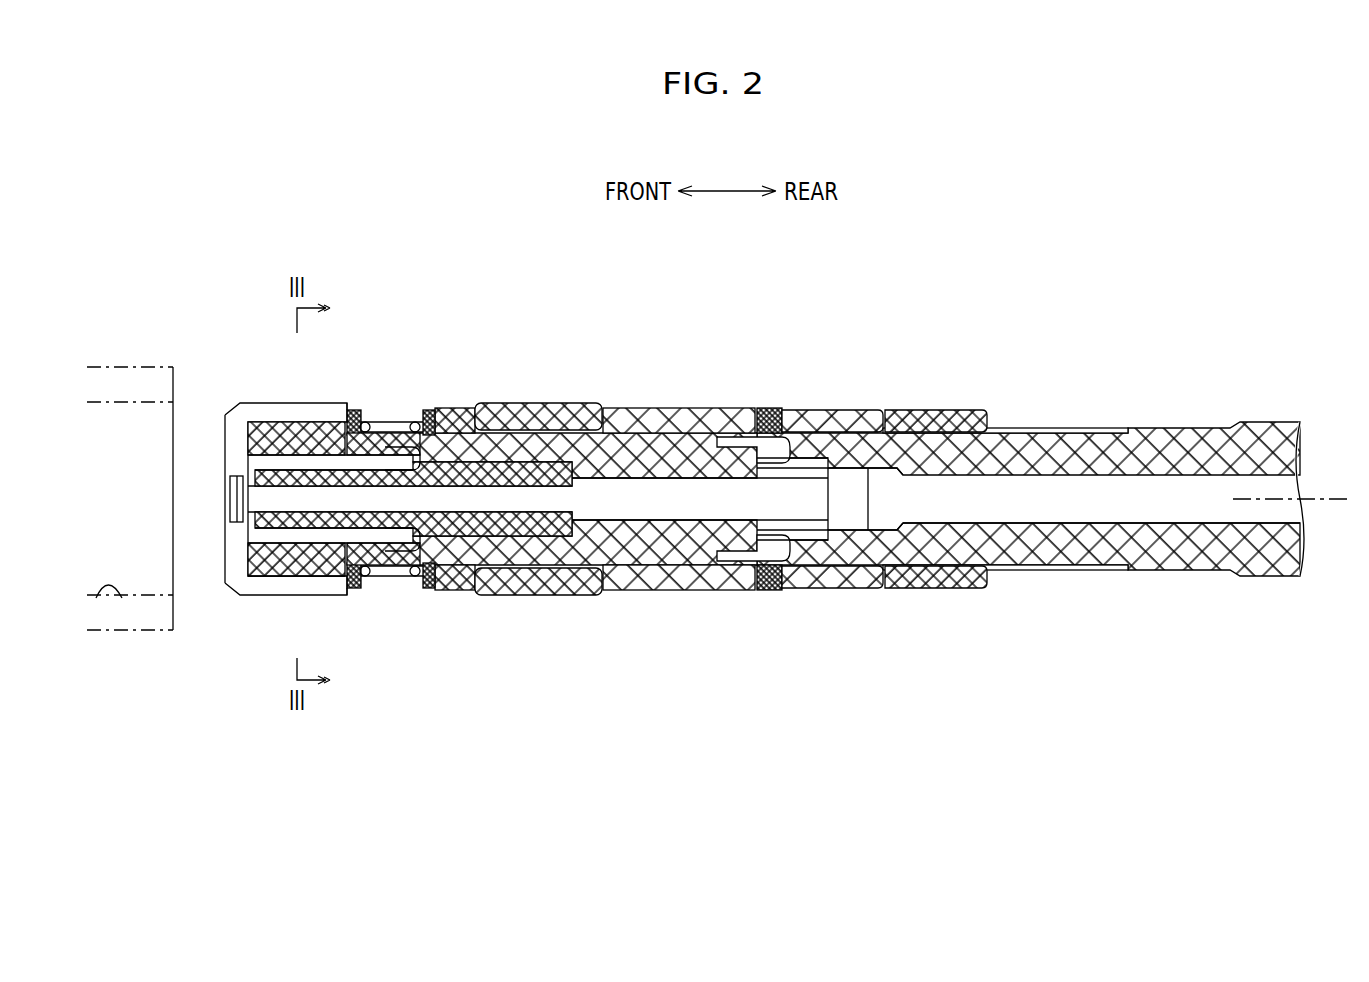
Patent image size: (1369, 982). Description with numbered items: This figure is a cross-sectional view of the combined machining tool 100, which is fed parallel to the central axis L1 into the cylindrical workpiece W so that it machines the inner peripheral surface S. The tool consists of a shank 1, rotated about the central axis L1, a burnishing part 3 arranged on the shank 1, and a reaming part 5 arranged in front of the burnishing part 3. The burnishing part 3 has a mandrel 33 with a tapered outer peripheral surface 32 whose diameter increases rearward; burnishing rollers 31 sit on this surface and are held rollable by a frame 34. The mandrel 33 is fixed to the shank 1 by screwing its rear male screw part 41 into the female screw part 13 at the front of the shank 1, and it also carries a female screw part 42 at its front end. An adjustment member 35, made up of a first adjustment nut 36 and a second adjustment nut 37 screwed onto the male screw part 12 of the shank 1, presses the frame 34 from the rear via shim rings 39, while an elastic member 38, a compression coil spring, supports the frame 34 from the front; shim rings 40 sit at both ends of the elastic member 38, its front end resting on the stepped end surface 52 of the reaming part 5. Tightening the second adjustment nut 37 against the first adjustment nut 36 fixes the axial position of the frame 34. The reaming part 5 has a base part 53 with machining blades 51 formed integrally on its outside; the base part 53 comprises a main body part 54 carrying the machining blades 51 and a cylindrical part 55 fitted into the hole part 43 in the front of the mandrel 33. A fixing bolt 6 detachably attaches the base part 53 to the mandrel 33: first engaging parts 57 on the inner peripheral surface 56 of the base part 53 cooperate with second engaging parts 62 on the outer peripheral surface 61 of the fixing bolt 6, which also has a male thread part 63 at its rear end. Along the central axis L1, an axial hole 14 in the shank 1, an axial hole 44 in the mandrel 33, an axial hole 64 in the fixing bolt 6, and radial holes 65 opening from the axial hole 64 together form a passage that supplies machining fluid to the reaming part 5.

The combined machining tool 100 is at (948, 278).
The shank 1 is at (1052, 469).
The burnishing part 3 is at (617, 487).
The reaming part 5 is at (380, 476).
The fixing bolt 6 is at (215, 540).
The male screw part 12 is at (1057, 428).
The female screw part 13 is at (854, 522).
The axial hole 14 is at (1082, 518).
The burnishing rollers 31 is at (490, 405).
The outer peripheral surface 32 is at (560, 420).
The mandrel 33 is at (620, 445).
The frame 34 is at (703, 407).
The adjustment member 35 is at (884, 448).
The first adjustment nut 36 is at (865, 410).
The second adjustment nut 37 is at (936, 469).
The elastic member 38 is at (410, 416).
The shim rings 39 is at (770, 592).
The shim rings 40 is at (353, 590).
The male screw part 41 is at (808, 537).
The female screw part 42 is at (500, 528).
The hole part 43 is at (388, 445).
The axial hole 44 is at (678, 510).
The machining blades 51 is at (240, 408).
The stepped end surface 52 is at (340, 585).
The base part 53 is at (334, 388).
The main body part 54 is at (322, 437).
The cylindrical part 55 is at (350, 435).
The inner peripheral surface 56 is at (310, 460).
The first engaging parts 57 is at (300, 565).
The outer peripheral surface 61 is at (235, 496).
The second engaging parts 62 is at (268, 560).
The male thread part 63 is at (450, 540).
The axial hole 64 is at (545, 503).
The radial holes 65 is at (245, 572).
The workpiece W is at (152, 358).
The inner peripheral surface S is at (113, 600).
The central axis L1 is at (1254, 500).